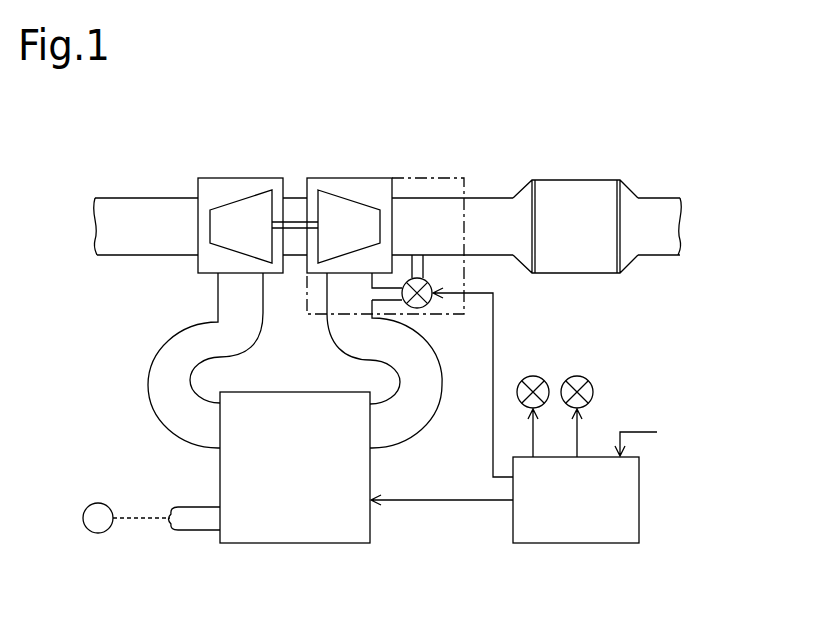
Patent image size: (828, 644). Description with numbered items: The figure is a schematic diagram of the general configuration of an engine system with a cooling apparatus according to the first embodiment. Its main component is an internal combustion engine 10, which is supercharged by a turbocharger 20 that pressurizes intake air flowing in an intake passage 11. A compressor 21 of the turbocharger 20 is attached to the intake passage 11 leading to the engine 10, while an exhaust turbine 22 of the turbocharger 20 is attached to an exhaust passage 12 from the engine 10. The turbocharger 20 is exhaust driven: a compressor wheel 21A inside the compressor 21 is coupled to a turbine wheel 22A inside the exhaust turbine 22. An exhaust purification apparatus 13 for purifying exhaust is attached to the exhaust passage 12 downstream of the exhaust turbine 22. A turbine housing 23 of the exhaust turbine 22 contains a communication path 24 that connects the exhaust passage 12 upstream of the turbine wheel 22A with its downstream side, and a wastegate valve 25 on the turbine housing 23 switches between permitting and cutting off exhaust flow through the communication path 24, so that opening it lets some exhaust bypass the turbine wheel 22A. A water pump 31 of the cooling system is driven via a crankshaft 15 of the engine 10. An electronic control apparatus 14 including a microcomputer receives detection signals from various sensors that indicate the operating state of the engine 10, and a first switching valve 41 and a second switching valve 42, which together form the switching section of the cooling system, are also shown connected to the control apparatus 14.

The internal combustion engine 10 is at (371, 518).
The intake passage 11 is at (158, 199).
The exhaust passage 12 is at (495, 199).
The exhaust purification apparatus 13 is at (575, 180).
The electronic control apparatus 14 is at (640, 500).
The crankshaft 15 is at (200, 506).
The turbocharger 20 is at (298, 127).
The compressor 21 is at (223, 178).
The compressor wheel 21A is at (215, 247).
The exhaust turbine 22 is at (385, 148).
The turbine wheel 22A is at (332, 188).
The turbine housing 23 is at (392, 178).
The communication path 24 is at (428, 264).
The wastegate valve 25 is at (423, 315).
The water pump 31 is at (98, 533).
The first switching valve 41 is at (533, 376).
The second switching valve 42 is at (577, 376).